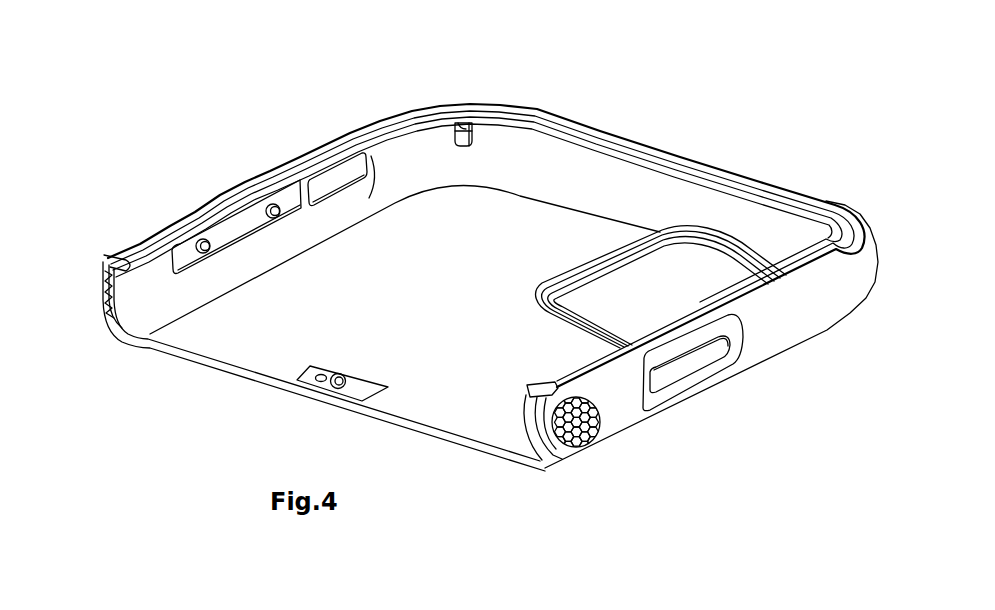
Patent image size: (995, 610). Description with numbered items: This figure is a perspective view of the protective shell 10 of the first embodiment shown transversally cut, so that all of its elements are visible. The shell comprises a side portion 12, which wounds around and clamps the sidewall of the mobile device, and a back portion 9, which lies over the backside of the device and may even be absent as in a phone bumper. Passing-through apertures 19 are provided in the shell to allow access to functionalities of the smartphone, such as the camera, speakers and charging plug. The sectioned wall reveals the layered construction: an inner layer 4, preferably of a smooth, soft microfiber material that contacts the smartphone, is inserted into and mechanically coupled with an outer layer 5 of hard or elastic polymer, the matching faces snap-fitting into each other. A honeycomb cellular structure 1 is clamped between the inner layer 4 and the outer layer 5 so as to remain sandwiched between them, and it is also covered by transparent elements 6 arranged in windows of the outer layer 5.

The honeycomb cellular structure 1 is at (105, 259).
The inner layer 4 is at (166, 333).
The outer layer 5 is at (147, 345).
The transparent elements 6 is at (100, 295).
The back portion 9 is at (480, 246).
The protective shell 10 is at (236, 404).
The side portion 12 is at (377, 166).
The passing-through apertures 19 is at (648, 276).